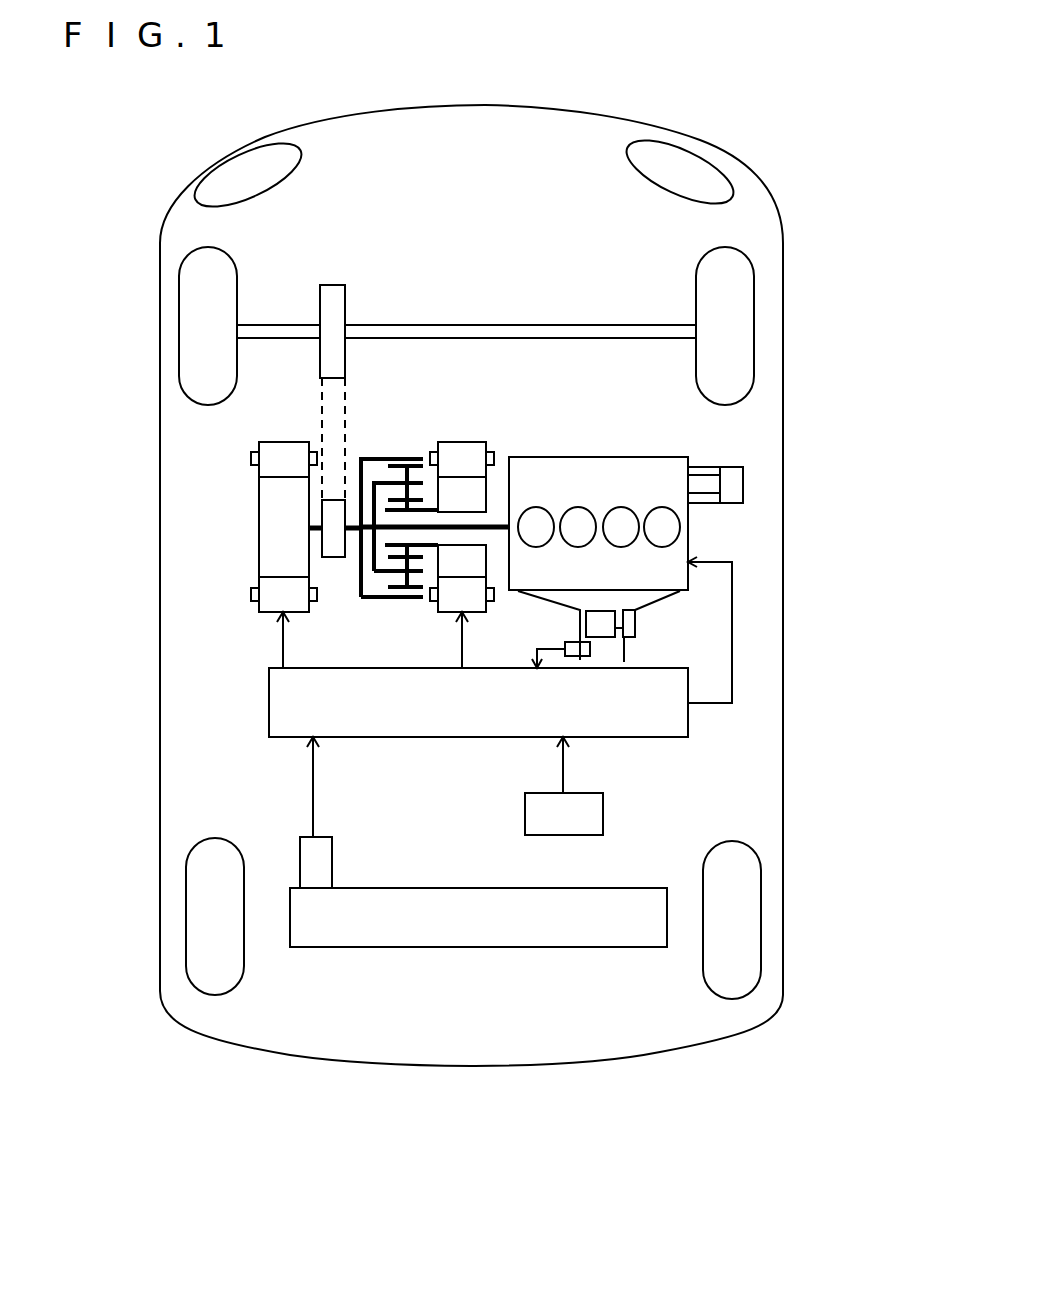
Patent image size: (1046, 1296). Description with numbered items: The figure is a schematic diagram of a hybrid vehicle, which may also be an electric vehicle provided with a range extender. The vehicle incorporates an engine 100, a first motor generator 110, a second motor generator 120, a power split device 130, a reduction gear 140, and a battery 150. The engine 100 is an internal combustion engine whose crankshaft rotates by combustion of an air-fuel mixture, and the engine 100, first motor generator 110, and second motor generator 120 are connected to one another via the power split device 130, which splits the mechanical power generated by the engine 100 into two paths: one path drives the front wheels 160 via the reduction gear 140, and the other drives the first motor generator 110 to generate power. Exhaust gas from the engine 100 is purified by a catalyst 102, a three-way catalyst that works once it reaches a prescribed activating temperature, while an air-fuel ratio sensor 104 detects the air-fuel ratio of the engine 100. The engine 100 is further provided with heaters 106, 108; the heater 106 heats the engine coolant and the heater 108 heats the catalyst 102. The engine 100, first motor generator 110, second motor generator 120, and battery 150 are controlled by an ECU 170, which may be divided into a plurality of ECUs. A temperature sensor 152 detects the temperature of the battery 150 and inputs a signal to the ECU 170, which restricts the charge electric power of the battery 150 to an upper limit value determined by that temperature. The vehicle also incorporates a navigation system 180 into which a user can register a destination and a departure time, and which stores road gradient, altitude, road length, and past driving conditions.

The engine 100 is at (545, 457).
The catalyst 102 is at (637, 628).
The air-fuel ratio sensor 104 is at (590, 650).
The heater 106 is at (743, 480).
The heater 108 is at (637, 613).
The first motor generator 110 is at (467, 442).
The second motor generator 120 is at (259, 528).
The power split device 130 is at (392, 455).
The reduction gear 140 is at (327, 257).
The battery 150 is at (447, 947).
The temperature sensor 152 is at (300, 870).
The front wheels 160 is at (180, 335).
The ECU 170 is at (269, 707).
The navigation system 180 is at (603, 812).